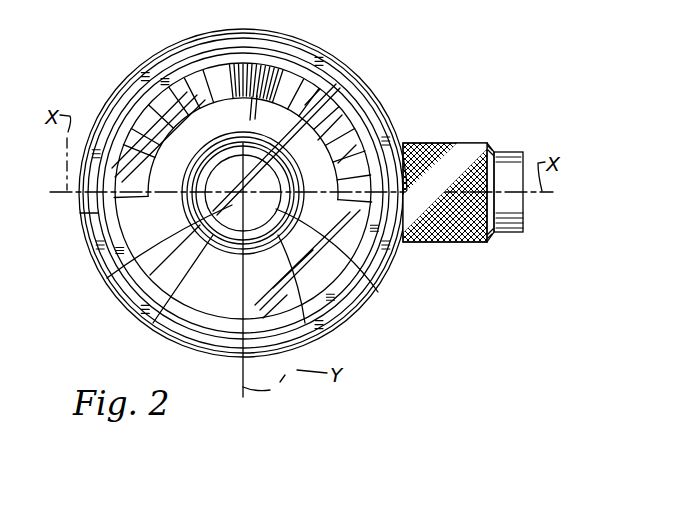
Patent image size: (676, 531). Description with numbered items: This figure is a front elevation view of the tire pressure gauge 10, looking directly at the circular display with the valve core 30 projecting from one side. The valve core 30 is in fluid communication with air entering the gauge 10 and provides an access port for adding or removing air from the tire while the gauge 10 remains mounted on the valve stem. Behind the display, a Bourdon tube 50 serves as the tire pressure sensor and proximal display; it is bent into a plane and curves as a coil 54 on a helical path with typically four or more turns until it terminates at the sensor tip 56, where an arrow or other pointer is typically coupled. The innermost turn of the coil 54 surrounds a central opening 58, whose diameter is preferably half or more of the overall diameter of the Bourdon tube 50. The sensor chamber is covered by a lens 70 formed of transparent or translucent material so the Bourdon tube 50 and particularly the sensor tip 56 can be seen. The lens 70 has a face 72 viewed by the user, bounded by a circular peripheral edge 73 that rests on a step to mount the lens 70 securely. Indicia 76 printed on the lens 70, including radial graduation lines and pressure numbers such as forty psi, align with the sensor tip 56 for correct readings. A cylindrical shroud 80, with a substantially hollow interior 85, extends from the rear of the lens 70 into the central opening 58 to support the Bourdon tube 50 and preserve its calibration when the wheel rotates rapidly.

The gauge 10 is at (387, 327).
The valve core 30 is at (440, 143).
The Bourdon tube 50 is at (153, 326).
The coil 54 is at (312, 338).
The sensor tip 56 is at (271, 85).
The central opening 58 is at (377, 290).
The lens 70 is at (127, 287).
The face 72 is at (209, 297).
The peripheral edge 73 is at (80, 213).
The indicia 76 is at (183, 77).
The shroud 80 is at (362, 185).
The interior 85 is at (107, 278).